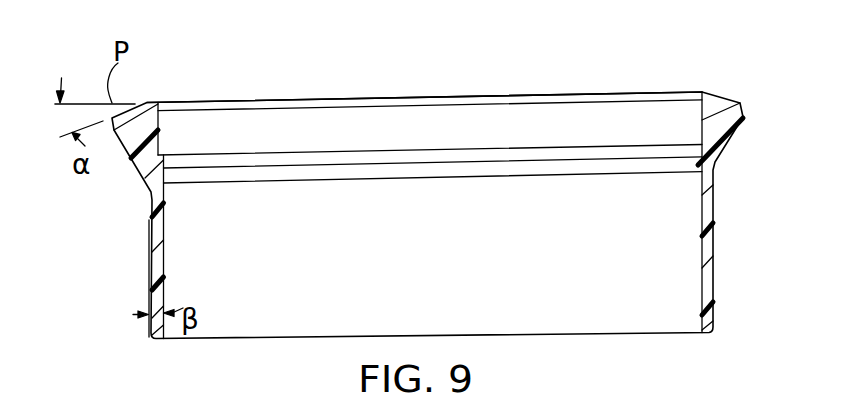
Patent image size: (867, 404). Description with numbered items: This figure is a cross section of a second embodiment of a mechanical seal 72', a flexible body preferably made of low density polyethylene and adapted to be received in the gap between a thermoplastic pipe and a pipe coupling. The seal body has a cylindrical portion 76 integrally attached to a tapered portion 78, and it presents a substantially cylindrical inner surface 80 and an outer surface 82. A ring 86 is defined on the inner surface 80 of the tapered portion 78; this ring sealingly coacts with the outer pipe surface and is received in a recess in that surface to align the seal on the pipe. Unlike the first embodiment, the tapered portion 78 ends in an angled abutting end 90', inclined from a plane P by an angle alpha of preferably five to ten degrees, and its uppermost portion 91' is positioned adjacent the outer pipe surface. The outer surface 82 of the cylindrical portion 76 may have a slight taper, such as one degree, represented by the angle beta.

The mechanical seal 72' is at (482, 215).
The cylindrical portion 76 is at (152, 268).
The tapered portion 78 is at (720, 160).
The inner surface 80 is at (165, 258).
The outer surface 82 is at (151, 231).
The ring 86 is at (290, 157).
The angled abutting end 90' is at (750, 109).
The uppermost portion 91' is at (448, 90).